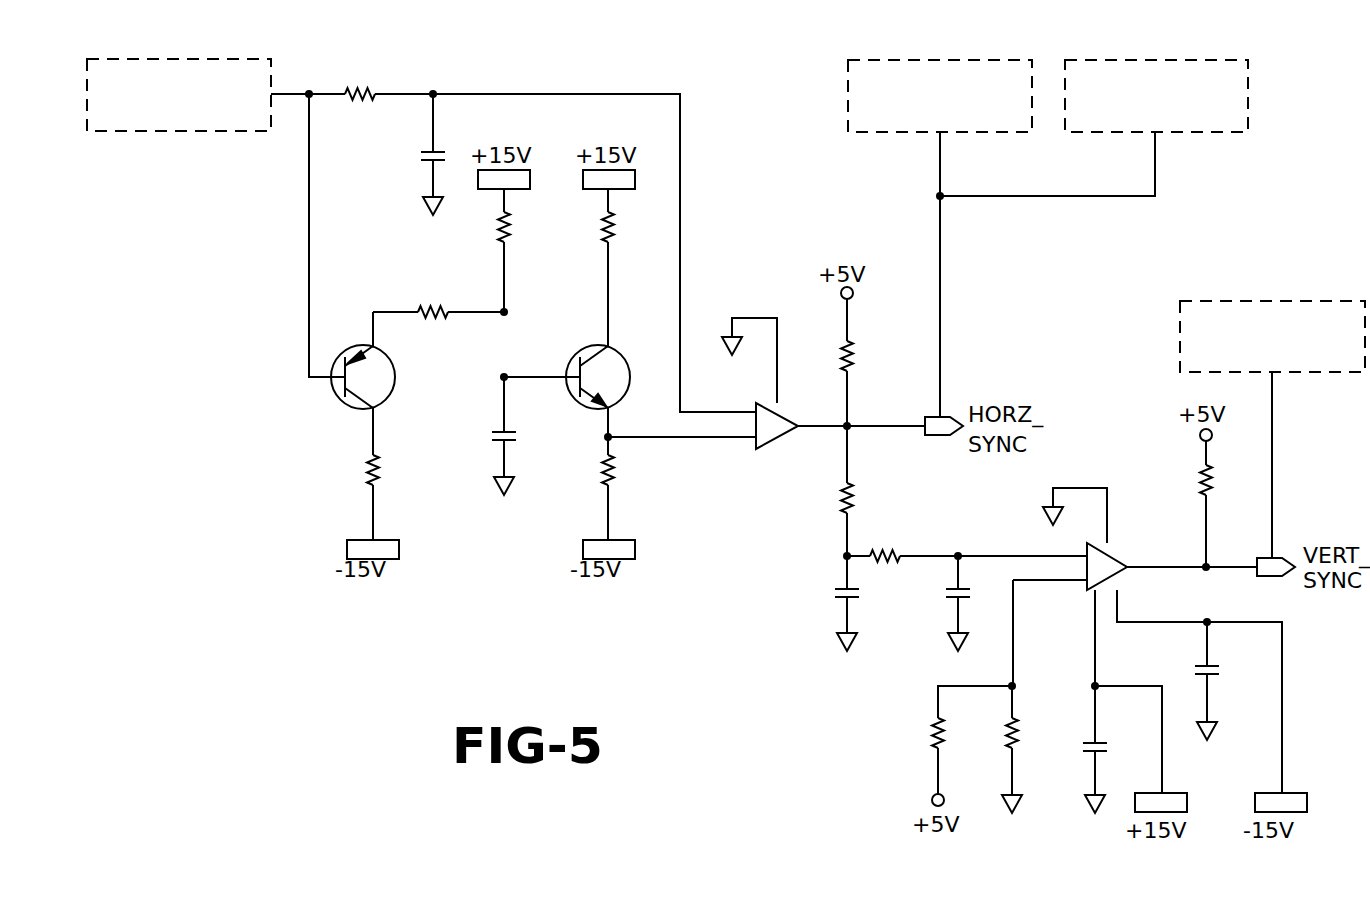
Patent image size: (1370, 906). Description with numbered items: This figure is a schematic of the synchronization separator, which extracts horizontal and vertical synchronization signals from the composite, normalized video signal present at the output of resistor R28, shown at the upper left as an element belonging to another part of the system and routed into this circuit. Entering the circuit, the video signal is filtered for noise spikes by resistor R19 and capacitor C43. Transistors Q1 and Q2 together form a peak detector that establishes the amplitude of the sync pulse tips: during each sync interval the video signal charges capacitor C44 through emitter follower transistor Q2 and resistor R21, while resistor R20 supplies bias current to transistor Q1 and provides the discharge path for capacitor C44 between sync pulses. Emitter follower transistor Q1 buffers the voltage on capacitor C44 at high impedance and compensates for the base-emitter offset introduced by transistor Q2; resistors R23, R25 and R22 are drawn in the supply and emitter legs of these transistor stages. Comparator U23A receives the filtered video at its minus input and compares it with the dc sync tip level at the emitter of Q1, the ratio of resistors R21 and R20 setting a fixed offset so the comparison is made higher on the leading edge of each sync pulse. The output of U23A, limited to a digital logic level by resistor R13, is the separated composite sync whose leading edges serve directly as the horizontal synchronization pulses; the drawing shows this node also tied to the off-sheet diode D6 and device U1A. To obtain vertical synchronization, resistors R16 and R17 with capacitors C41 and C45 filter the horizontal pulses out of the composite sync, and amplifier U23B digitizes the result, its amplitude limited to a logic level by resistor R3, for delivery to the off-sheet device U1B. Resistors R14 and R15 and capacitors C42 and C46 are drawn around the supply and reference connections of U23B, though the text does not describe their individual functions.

The resistor R28 is at (179, 95).
The diode D6 (see FIG-10) D6 is at (940, 96).
The integrated circuit U1A (see FIG-6) U1A is at (1156, 96).
The integrated circuit U1B (see FIG-7) U1B is at (1272, 336).
The resistor R19 is at (356, 97).
The capacitor C43 is at (400, 181).
The resistor R20 is at (533, 257).
The resistor R23 100 R23 is at (583, 228).
The resistor R21 is at (433, 313).
The emitter follower transistor Q2 is at (352, 387).
The emitter follower transistor Q1 is at (592, 365).
The capacitor C44 is at (477, 461).
The resistor R25 100 R25 is at (345, 488).
The resistor R22 100K R22 is at (639, 488).
The comparator U23A is at (762, 405).
The resistor R13 is at (873, 340).
The resistor R16 is at (818, 515).
The resistor R17 is at (910, 532).
The capacitor C41 is at (811, 618).
The capacitor C45 is at (922, 618).
The amplifier U23B is at (1107, 548).
The resistor R3 is at (1186, 475).
The capacitor C46 0.1uf C46 is at (1233, 688).
The resistor R14 10K R14 is at (913, 757).
The resistor R15 10K R15 is at (990, 760).
The capacitor C42 0.1uf C42 is at (1070, 763).